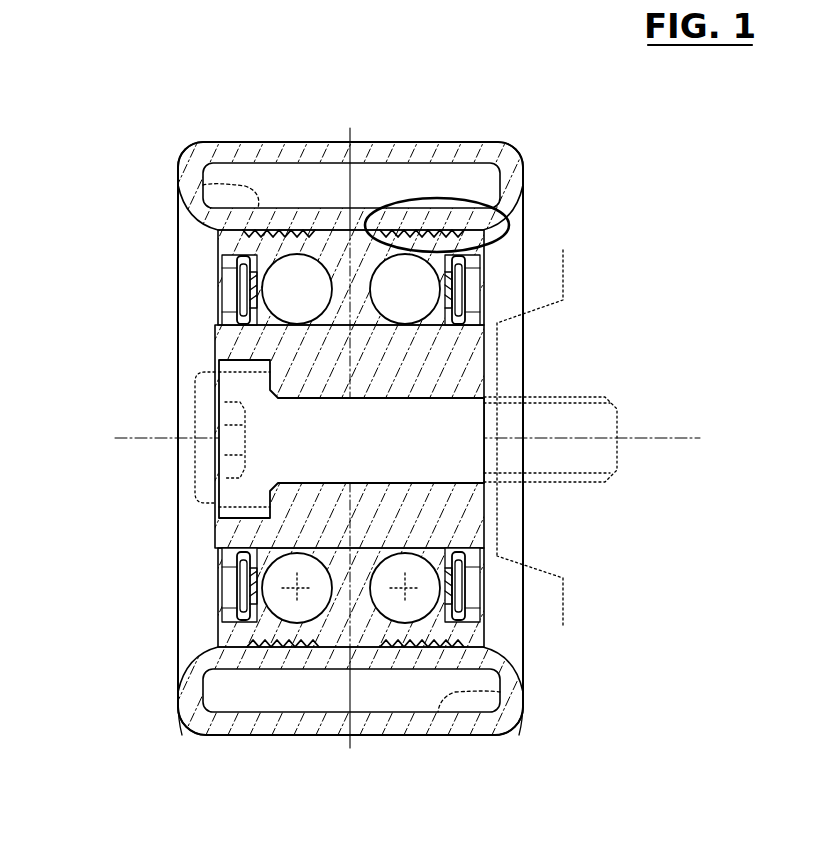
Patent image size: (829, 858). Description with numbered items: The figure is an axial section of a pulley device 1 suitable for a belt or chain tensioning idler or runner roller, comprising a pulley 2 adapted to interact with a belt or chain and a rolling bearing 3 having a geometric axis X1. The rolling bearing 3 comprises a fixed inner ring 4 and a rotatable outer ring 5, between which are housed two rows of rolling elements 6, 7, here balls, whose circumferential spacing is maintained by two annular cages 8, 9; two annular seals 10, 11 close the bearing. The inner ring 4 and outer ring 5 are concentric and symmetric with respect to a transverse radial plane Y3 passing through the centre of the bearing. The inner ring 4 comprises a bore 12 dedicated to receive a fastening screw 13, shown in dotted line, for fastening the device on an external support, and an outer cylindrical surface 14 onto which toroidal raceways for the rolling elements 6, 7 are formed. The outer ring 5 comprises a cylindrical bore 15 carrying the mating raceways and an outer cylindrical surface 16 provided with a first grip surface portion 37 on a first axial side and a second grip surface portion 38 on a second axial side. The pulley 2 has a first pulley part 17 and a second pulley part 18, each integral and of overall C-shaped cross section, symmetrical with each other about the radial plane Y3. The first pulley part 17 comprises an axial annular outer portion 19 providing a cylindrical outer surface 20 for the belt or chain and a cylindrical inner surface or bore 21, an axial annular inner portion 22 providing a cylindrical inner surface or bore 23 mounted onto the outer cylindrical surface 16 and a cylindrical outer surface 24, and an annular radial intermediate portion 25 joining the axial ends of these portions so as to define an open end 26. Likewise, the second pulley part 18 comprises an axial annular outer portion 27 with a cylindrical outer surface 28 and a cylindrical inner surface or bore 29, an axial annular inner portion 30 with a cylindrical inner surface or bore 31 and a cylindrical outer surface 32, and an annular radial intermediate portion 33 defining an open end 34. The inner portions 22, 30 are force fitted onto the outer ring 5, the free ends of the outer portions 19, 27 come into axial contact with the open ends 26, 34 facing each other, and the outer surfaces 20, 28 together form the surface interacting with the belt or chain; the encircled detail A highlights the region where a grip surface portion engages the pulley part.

The pulley device 1 is at (185, 147).
The pulley 2 is at (334, 382).
The rolling bearing 3 is at (490, 278).
The inner ring 4 is at (291, 436).
The outer ring 5 is at (240, 272).
The rolling elements 6 is at (287, 292).
The rolling elements 7 is at (395, 292).
The annular cage 8 is at (238, 290).
The annular cage 9 is at (355, 685).
The annular seal 10 is at (245, 605).
The annular seal 11 is at (485, 300).
The bore 12 is at (300, 472).
The fastening screw 13 is at (617, 407).
The outer cylindrical surface 14 is at (245, 323).
The cylindrical bore 15 is at (243, 580).
The outer cylindrical surface 16 is at (235, 660).
The first pulley part 17 is at (305, 125).
The second pulley part 18 is at (334, 382).
The axial annular outer portion 19 is at (340, 190).
The cylindrical outer surface 20 is at (217, 742).
The cylindrical inner surface or bore 21 is at (232, 692).
The axial annular inner portion 22 is at (285, 230).
The cylindrical inner surface or bore 23 is at (245, 250).
The cylindrical outer surface 24 is at (215, 192).
The annular radial intermediate portion 25 is at (178, 185).
The open end 26 is at (372, 195).
The axial annular outer portion 27 is at (445, 150).
The cylindrical outer surface 28 is at (480, 742).
The cylindrical inner surface or bore 29 is at (478, 700).
The axial annular inner portion 30 is at (405, 197).
The cylindrical inner surface or bore 31 is at (483, 618).
The cylindrical outer surface 32 is at (490, 687).
The annular radial intermediate portion 33 is at (513, 185).
The open end 34 is at (362, 700).
The first grip surface portion 37 is at (294, 650).
The second grip surface portion 38 is at (413, 650).
The detail A is at (512, 232).
The geometric axis X1 is at (407, 455).
The transverse radial plane Y3 is at (371, 753).